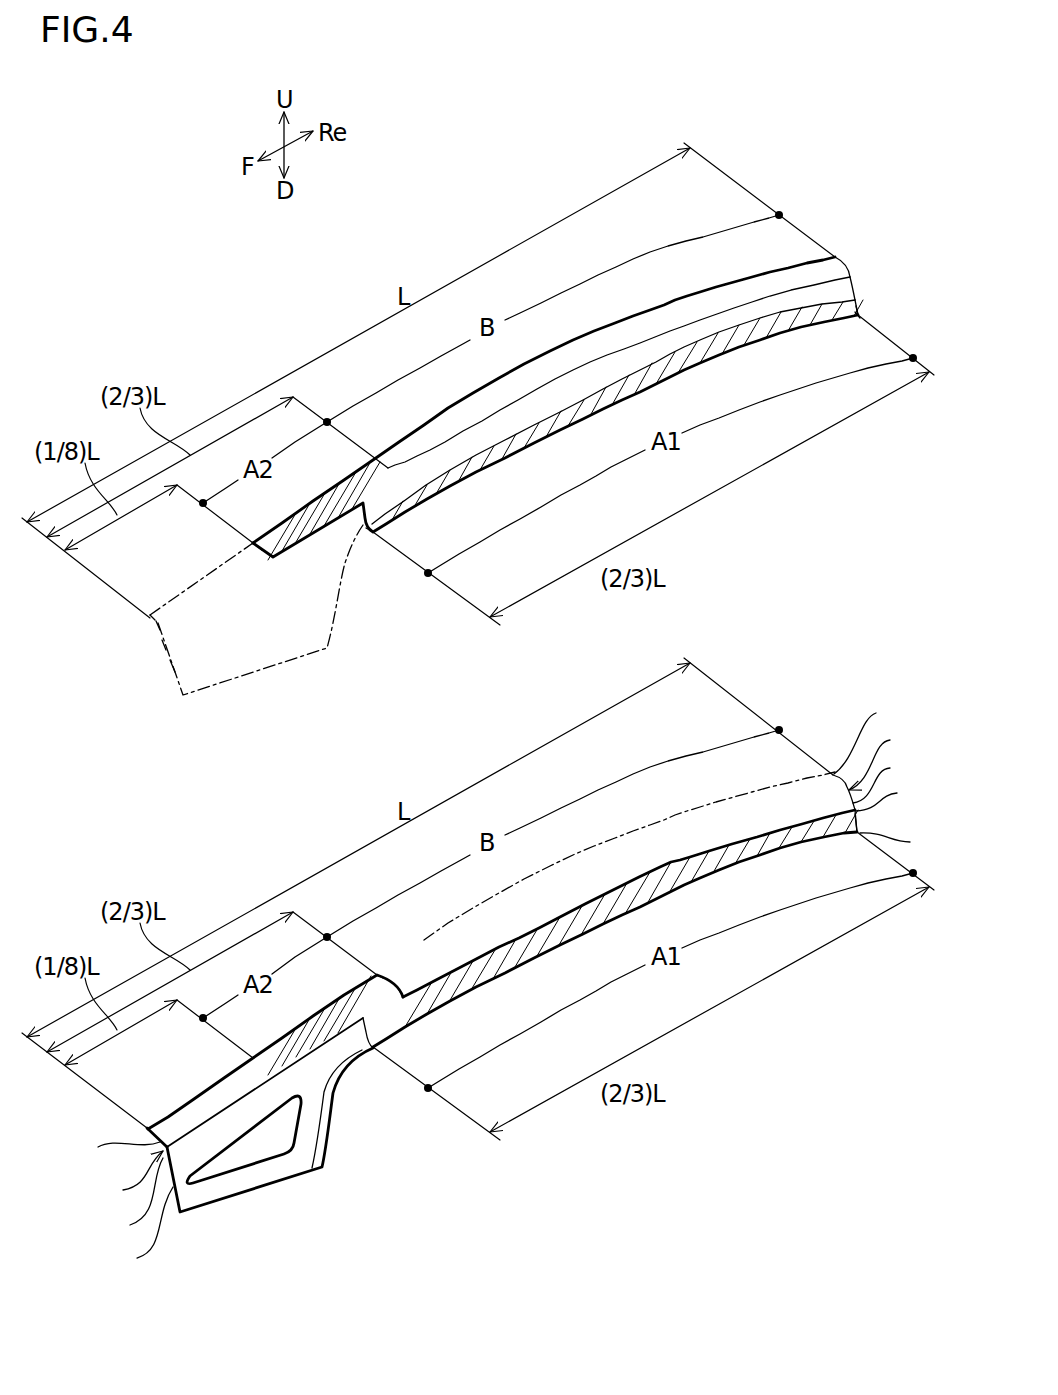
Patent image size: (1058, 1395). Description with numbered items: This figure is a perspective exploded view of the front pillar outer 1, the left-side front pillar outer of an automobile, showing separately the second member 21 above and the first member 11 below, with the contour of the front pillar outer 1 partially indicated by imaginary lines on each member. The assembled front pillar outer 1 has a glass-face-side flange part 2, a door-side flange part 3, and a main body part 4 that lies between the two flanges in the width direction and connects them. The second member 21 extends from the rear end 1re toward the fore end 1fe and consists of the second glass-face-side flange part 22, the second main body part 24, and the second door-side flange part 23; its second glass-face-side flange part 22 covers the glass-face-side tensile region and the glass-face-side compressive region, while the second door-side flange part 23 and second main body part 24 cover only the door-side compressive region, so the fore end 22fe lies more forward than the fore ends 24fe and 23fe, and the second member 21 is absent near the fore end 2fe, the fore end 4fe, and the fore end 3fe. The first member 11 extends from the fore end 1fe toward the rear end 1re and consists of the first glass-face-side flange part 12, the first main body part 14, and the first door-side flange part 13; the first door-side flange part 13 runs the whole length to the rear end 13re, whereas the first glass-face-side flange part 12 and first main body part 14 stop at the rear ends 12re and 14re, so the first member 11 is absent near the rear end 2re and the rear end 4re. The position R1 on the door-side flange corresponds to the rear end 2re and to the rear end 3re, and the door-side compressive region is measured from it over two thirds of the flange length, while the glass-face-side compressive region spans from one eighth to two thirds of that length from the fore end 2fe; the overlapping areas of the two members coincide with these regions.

The front pillar outer 1 is at (117, 267).
The second member 21 is at (827, 240).
The first member 11 is at (827, 755).
The glass-face-side flange part 2 is at (500, 415).
The second glass-face-side flange part 22 is at (617, 330).
The main body part 4 is at (510, 485).
The second main body part 24 is at (590, 373).
The door-side flange part 3 is at (670, 465).
The second door-side flange part 23 is at (597, 398).
The first glass-face-side flange part 12 is at (237, 1080).
The first main body part 14 is at (380, 1013).
The first door-side flange part 13 is at (597, 913).
The rear end of the glass-face-side flange part 2re is at (836, 256).
The rear end of the front pillar outer 1re is at (852, 277).
The rear end of the main body part 4re is at (854, 294).
The rear end of the door-side flange part 3re is at (858, 310).
The rear end of the first door-side flange part 13re is at (857, 822).
The position corresponding to the rear end of the glass-face-side flange part R1 is at (860, 316).
The fore end of the glass-face-side flange part 2fe is at (160, 627).
The fore end of the front pillar outer 1fe is at (163, 636).
The fore end of the main body part 4fe is at (170, 657).
The fore end of the door-side flange part 3fe is at (178, 670).
The fore end of the second glass-face-side flange part 22fe is at (258, 562).
The fore end of the second main body part 24fe is at (362, 524).
The fore end of the second door-side flange part 23fe is at (373, 535).
The rear end of the first glass-face-side flange part 12re is at (392, 970).
The rear end of the first main body part 14re is at (412, 997).